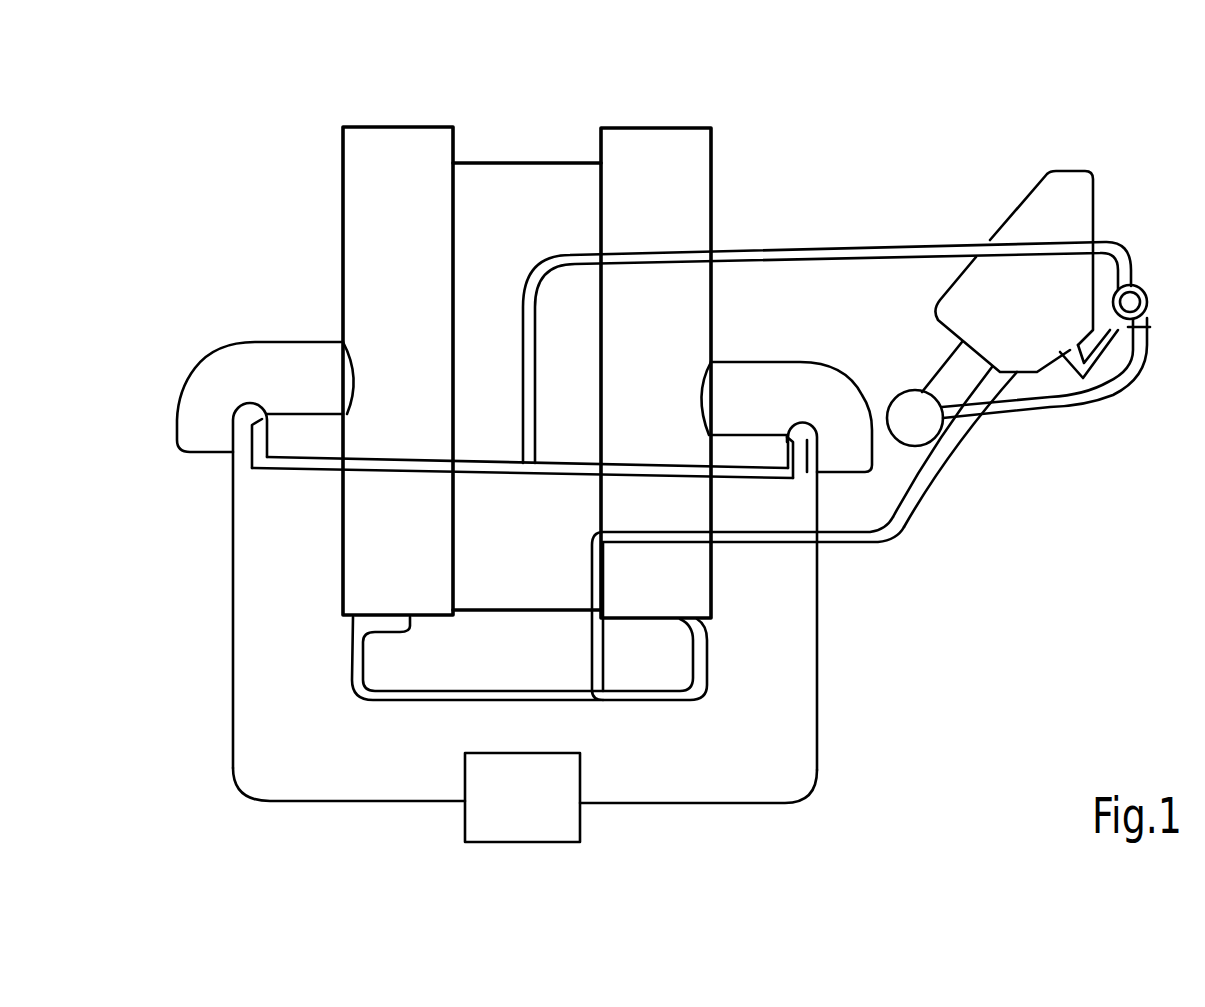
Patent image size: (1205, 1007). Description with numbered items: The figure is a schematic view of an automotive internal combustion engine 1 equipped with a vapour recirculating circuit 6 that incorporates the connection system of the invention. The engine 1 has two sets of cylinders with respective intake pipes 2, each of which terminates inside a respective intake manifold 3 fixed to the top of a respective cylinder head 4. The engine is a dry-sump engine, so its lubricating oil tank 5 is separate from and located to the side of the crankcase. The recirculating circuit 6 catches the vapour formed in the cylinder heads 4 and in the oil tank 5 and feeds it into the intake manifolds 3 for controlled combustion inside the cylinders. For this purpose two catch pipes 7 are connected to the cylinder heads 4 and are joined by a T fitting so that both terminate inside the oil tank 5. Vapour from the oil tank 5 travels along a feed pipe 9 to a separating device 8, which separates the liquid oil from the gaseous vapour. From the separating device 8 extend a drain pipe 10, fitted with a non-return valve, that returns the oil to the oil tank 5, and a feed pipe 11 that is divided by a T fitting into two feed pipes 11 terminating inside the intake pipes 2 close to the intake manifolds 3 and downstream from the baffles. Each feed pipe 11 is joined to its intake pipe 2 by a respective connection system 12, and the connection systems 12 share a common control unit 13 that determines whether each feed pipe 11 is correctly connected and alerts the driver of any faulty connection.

The automotive internal combustion engine 1 is at (952, 625).
The intake pipe 2 is at (278, 347).
The intake manifold 3 is at (352, 162).
The cylinder head 4 is at (380, 104).
The lubricating oil tank 5 is at (1025, 208).
The recirculating circuit 6 is at (1013, 473).
The catch pipe 7 is at (893, 536).
The separating device 8 is at (1146, 300).
The feed pipe 9 is at (1117, 395).
The drain pipe 10 is at (1108, 345).
The feed pipe 11 is at (1108, 250).
The connection system 12 is at (258, 481).
The control unit 13 is at (560, 843).